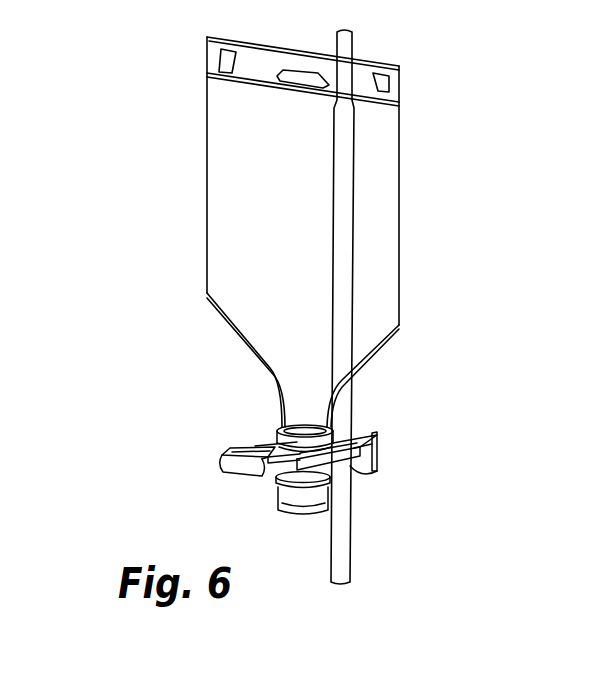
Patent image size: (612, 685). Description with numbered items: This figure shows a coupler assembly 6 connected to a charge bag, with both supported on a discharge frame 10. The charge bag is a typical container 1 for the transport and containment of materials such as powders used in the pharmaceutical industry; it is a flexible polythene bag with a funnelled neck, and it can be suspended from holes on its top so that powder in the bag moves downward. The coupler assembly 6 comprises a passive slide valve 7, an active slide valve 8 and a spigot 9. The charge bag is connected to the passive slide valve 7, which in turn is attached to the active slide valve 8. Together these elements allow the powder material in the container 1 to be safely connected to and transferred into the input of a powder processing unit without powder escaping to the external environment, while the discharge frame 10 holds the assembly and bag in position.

The container 1 is at (200, 221).
The coupler assembly 6 is at (300, 452).
The passive slide valve 7 is at (377, 438).
The active slide valve 8 is at (374, 472).
The spigot 9 is at (291, 468).
The discharge frame 10 is at (343, 521).